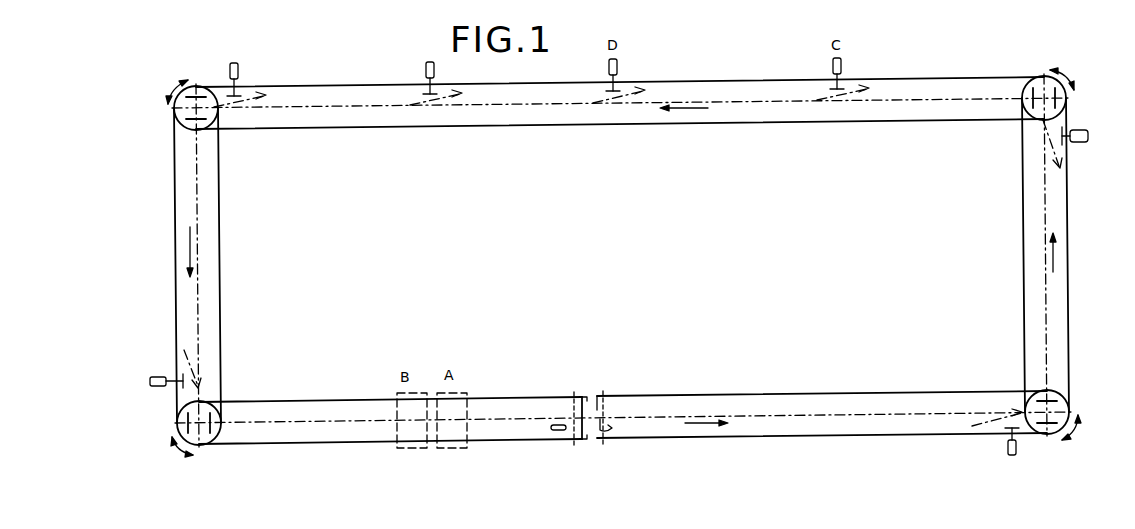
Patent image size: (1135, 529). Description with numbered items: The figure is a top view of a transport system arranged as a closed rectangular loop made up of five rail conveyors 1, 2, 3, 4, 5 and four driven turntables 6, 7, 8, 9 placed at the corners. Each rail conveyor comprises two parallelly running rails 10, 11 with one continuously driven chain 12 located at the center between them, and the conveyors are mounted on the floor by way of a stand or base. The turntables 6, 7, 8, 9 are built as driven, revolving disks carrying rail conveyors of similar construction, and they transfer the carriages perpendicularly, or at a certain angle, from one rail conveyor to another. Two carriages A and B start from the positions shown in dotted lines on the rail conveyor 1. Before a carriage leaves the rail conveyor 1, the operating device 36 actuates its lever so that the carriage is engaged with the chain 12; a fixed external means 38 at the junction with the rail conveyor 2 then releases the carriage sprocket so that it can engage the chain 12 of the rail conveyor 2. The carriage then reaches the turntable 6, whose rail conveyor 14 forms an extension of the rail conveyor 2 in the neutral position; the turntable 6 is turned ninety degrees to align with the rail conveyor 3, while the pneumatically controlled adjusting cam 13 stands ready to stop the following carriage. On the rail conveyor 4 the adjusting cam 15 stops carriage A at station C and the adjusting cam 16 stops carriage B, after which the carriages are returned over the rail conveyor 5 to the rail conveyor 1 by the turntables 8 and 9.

The rail conveyor 1 is at (490, 444).
The rail conveyor 2 is at (758, 444).
The rail conveyor 3 is at (1068, 266).
The rail conveyor 4 is at (945, 82).
The rail conveyor 5 is at (172, 262).
The turntable 6 is at (1040, 439).
The turntable 7 is at (1068, 102).
The turntable 8 is at (199, 84).
The turntable 9 is at (207, 449).
The rail 10 is at (304, 400).
The rail 11 is at (288, 447).
The chain 12 is at (511, 418).
The adjusting cam 13 is at (978, 430).
The rail conveyor 14 is at (1067, 402).
The adjusting cam 15 is at (865, 83).
The adjusting cam 16 is at (638, 85).
The operating device 36 is at (563, 431).
The fixed external means 38 is at (599, 437).